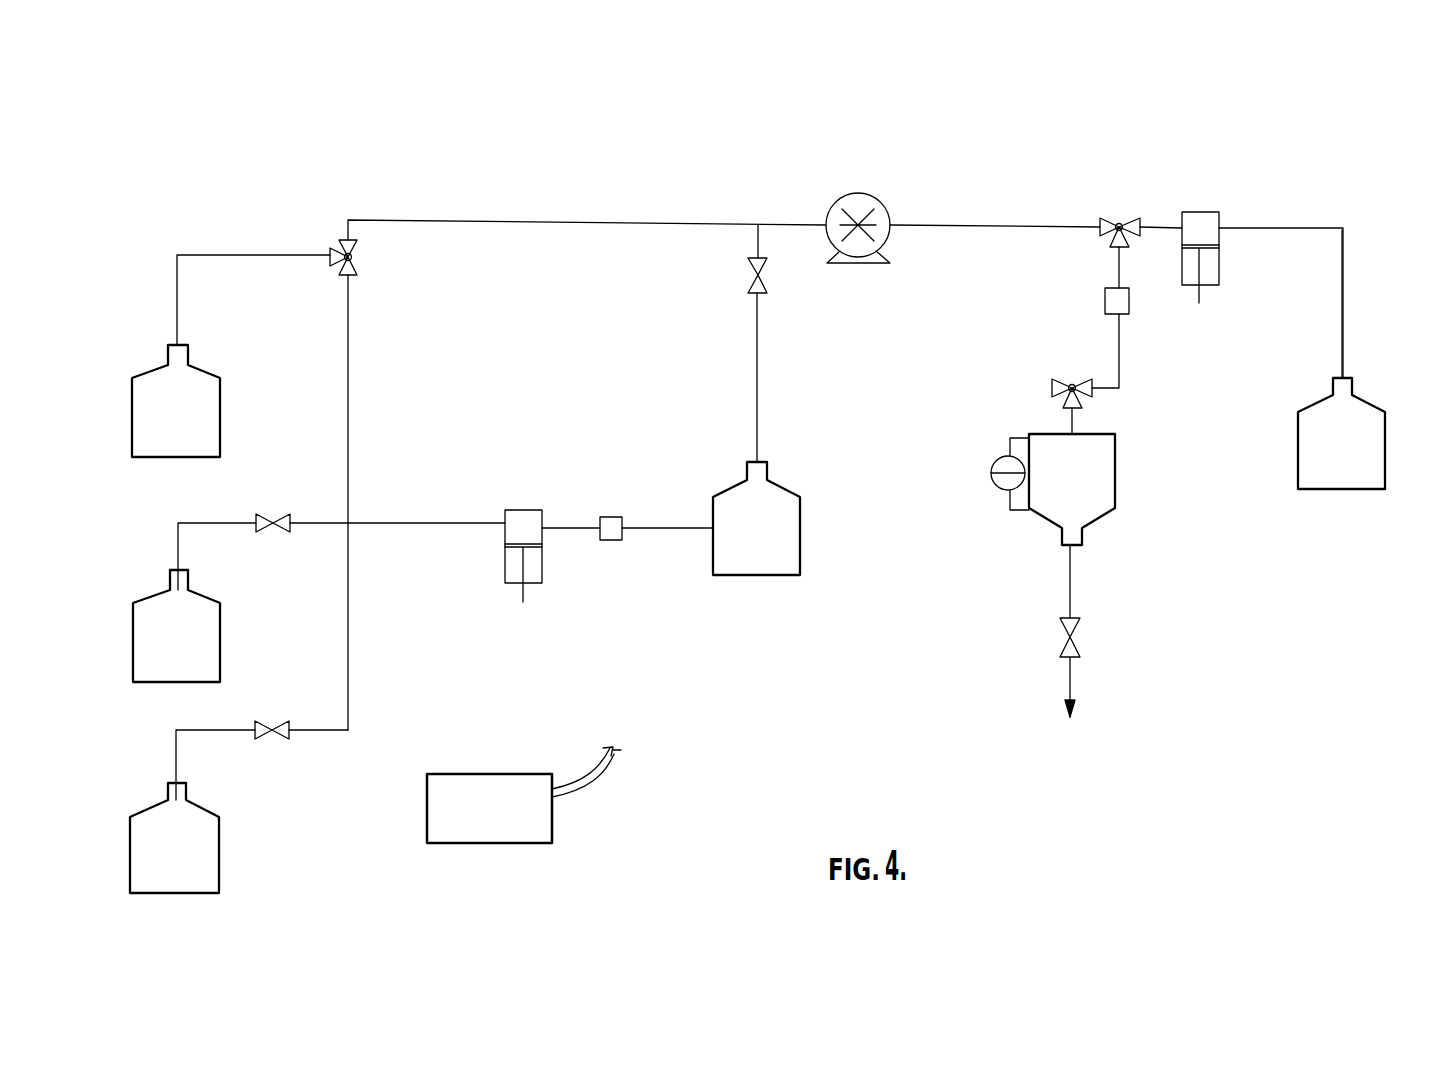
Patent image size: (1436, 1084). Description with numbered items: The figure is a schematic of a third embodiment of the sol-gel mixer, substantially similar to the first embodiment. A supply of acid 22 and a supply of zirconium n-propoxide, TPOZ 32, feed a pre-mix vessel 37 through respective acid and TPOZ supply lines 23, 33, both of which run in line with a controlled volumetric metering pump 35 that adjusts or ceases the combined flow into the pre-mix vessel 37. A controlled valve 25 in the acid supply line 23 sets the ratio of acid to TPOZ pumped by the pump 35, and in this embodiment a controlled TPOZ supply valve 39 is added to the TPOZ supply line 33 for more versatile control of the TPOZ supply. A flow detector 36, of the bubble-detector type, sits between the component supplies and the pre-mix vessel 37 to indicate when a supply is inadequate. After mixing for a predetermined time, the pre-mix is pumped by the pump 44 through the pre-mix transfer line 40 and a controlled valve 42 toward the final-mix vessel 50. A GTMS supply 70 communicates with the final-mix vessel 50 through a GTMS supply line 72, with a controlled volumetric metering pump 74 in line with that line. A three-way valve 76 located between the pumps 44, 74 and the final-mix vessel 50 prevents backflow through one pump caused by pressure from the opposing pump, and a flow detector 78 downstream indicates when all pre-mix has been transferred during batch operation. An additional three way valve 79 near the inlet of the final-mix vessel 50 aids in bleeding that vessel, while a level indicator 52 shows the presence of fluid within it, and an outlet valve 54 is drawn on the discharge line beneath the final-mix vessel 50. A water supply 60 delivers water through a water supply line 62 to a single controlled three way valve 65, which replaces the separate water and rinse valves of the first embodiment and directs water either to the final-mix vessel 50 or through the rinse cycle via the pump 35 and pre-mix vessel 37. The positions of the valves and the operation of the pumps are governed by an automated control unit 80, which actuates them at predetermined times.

The acid supply 22 is at (222, 640).
The acid supply line 23 is at (161, 555).
The controlled valve 25 is at (267, 515).
The TPOZ supply 32 is at (210, 837).
The TPOZ supply line 33 is at (166, 751).
The controlled volumetric metering pump 35 is at (543, 562).
The flow detector 36 is at (608, 516).
The pre-mix vessel 37 is at (753, 577).
The controlled TPOZ supply valve 39 is at (295, 740).
The pre-mix transfer line 40 is at (791, 397).
The controlled valve 42 is at (762, 277).
The metering pump 44 is at (883, 202).
The final-mix vessel 50 is at (1118, 470).
The level indicator 52 is at (990, 470).
The outlet valve 54 is at (1075, 637).
The water supply 60 is at (203, 370).
The water supply line 62 is at (518, 209).
The controlled three way valve 65 is at (362, 272).
The GTMS supply 70 is at (1372, 405).
The GTMS supply line 72 is at (1380, 294).
The controlled volumetric metering pump 74 is at (1213, 212).
The three-way valve 76 is at (1112, 222).
The flow detector 78 is at (1105, 303).
The three way valve 79 is at (1070, 382).
The automated control unit 80 is at (482, 774).